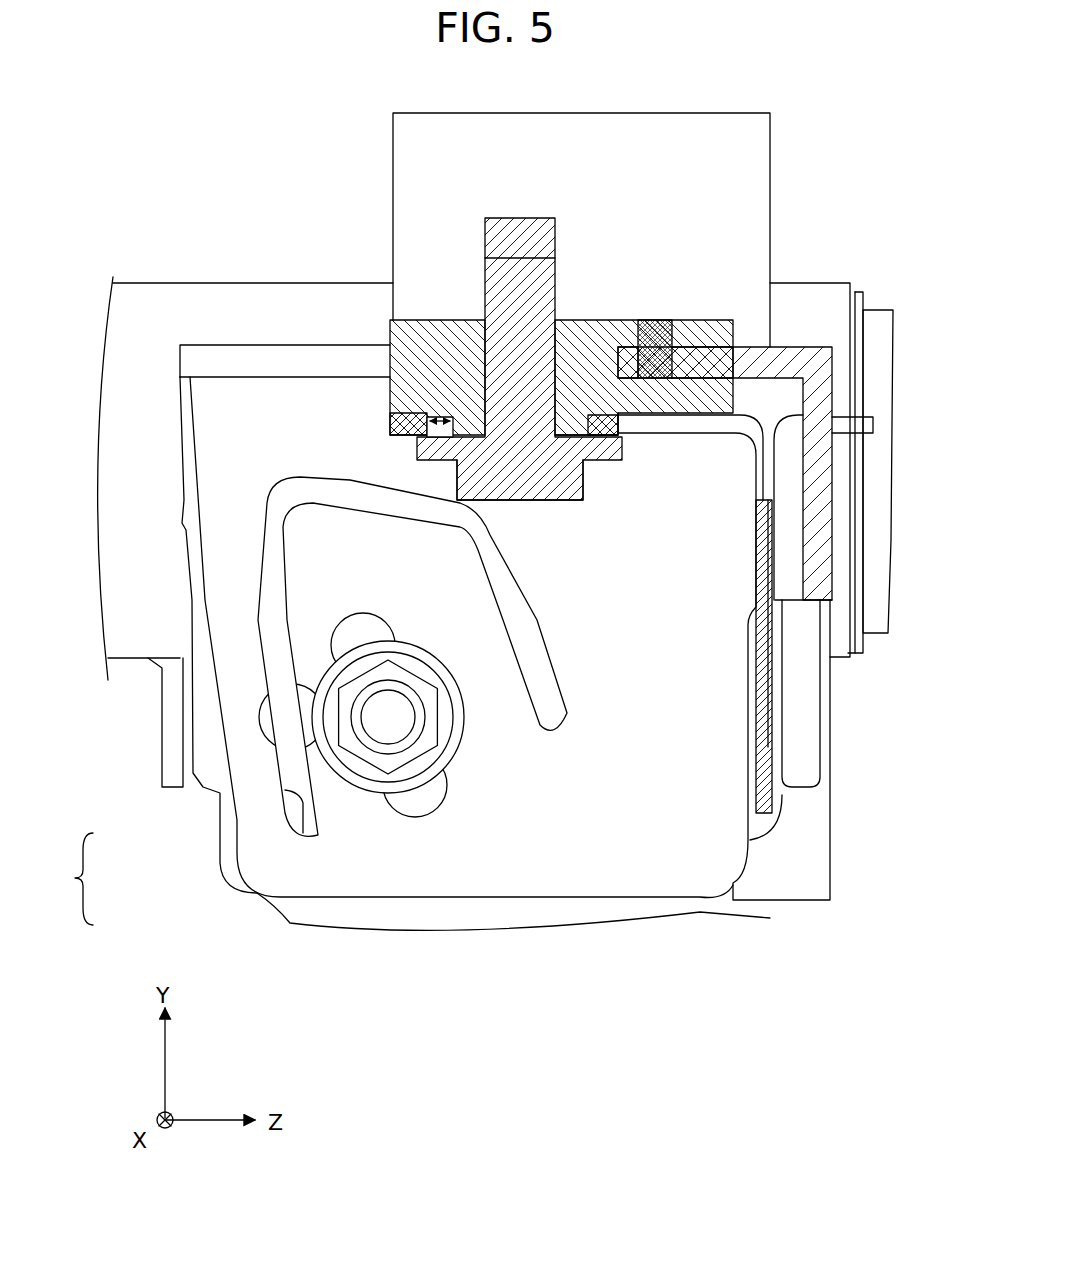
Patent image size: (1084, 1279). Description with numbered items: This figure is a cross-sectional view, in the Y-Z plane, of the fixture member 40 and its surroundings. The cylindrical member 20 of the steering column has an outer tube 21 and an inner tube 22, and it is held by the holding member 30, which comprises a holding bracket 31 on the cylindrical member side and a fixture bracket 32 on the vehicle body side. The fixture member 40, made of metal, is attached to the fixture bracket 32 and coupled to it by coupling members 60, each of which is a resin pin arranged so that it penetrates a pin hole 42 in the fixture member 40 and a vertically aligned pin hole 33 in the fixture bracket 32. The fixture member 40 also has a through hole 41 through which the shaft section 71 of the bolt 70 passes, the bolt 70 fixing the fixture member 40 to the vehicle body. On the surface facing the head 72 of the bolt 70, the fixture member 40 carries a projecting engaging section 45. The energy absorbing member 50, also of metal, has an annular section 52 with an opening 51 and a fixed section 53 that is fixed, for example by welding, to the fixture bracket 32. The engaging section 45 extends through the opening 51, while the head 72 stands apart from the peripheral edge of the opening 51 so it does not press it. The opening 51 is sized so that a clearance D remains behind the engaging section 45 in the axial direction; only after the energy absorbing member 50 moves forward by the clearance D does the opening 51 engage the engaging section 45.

The cylindrical member 20 is at (155, 233).
The outer tube 21 is at (223, 283).
The inner tube 22 is at (888, 305).
The holding member 30 is at (66, 879).
The holding bracket 31 is at (258, 890).
The fixture bracket 32 is at (798, 347).
The pin hole 33 is at (673, 363).
The fixture member 40 is at (509, 361).
The through hole 41 is at (555, 350).
The pin hole 42 is at (660, 348).
The engaging section 45 is at (578, 425).
The energy absorbing member 50 is at (790, 652).
The opening 51 is at (437, 425).
The annular section 52 is at (390, 424).
The fixed section 53 is at (855, 418).
The coupling member 60 is at (653, 337).
The bolt 70 is at (585, 537).
The shaft section 71 is at (497, 257).
The head 72 is at (532, 490).
The clearance D is at (447, 425).